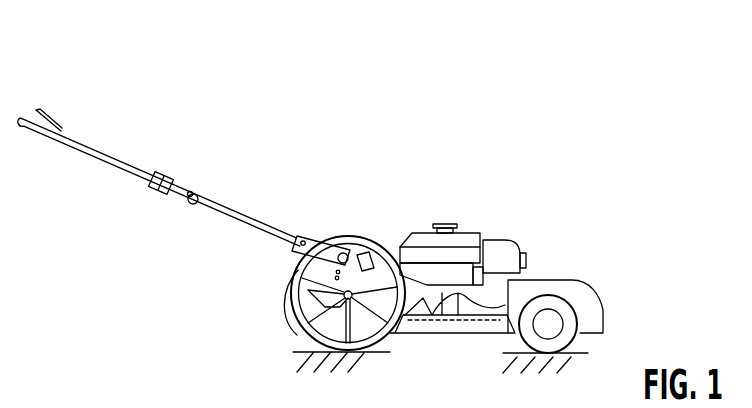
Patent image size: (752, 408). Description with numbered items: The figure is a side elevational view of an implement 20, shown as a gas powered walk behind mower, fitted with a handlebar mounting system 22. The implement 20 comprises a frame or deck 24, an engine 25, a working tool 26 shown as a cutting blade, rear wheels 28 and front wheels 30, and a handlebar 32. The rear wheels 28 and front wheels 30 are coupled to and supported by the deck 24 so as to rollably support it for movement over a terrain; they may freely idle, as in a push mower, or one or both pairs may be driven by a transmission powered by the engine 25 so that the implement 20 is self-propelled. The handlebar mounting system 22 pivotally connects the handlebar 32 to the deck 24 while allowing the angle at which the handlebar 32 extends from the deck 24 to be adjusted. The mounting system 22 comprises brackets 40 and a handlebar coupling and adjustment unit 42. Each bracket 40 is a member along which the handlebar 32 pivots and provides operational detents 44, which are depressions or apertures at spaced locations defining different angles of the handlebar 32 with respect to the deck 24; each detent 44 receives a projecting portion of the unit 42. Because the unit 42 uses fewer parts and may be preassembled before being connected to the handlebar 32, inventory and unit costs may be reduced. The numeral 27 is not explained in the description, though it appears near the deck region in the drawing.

The implement 20 is at (270, 96).
The handlebar mounting system 22 is at (322, 226).
The deck 24 is at (577, 282).
The engine 25 is at (485, 240).
The working tool 26 is at (508, 290).
The deck 27 is at (490, 298).
The rear wheels 28 is at (302, 327).
The front wheels 30 is at (583, 336).
The handlebar 32 is at (93, 157).
The bracket 40 is at (372, 265).
The handlebar coupling and adjustment unit 42 is at (303, 240).
The detents 44 is at (335, 273).